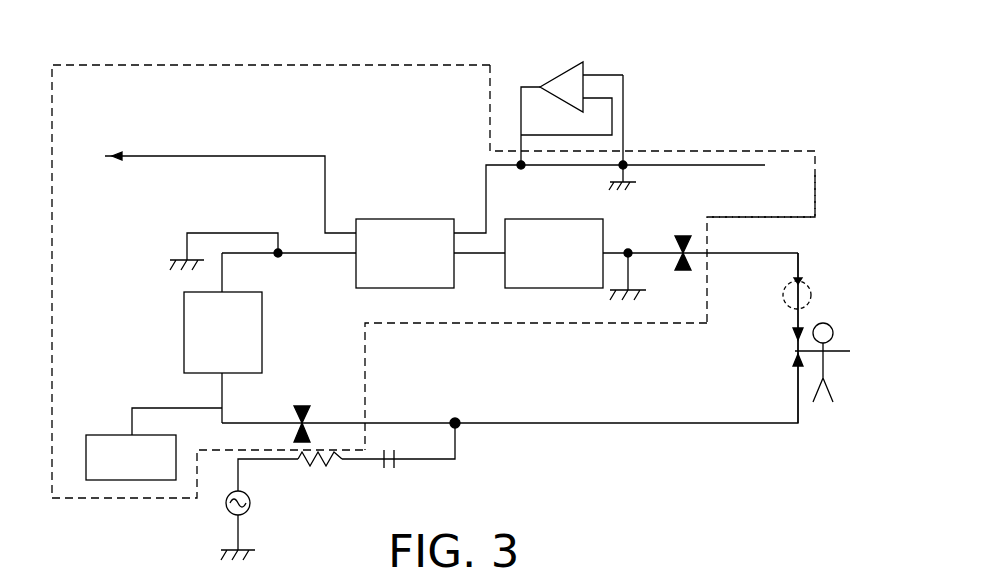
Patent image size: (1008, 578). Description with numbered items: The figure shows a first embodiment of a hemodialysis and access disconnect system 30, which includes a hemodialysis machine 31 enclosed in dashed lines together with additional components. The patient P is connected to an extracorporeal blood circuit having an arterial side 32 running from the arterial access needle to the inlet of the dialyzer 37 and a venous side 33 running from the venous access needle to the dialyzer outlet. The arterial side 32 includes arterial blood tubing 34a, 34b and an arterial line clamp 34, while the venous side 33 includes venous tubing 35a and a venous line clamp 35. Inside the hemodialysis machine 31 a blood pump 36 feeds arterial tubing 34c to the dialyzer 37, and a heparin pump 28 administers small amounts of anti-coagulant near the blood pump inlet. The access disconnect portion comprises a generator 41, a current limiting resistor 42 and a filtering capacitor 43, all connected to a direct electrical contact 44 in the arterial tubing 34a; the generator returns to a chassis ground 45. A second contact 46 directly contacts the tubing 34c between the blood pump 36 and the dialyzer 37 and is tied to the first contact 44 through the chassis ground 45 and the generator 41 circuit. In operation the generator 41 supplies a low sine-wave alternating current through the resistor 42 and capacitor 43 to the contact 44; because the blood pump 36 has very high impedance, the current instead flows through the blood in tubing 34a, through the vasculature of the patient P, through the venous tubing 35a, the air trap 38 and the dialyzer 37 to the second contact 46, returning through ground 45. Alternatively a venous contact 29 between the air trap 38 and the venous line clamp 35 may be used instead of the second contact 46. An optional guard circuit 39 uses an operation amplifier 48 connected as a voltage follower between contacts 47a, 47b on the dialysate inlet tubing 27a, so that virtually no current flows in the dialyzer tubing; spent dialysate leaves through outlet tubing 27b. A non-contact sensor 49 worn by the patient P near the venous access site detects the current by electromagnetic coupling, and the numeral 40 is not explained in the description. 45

The inlet tubing 27a is at (720, 165).
The outlet tubing 27b is at (216, 156).
The heparin pump 28 is at (122, 482).
The venous contact 29 is at (636, 260).
The hemodialysis and access disconnect system 30 is at (800, 98).
The hemodialysis machine 31 is at (53, 300).
The arterial side 32 is at (628, 452).
The venous side 33 is at (812, 238).
The arterial line clamp 34 is at (312, 412).
The arterial blood tubing 34a is at (672, 421).
The arterial blood tubing 34b is at (230, 423).
The arterial tubing 34c is at (322, 258).
The venous line clamp 35 is at (682, 238).
The venous tubing 35a is at (757, 256).
The blood pump 36 is at (184, 336).
The dialyzer 37 is at (411, 219).
The air trap 38 is at (534, 219).
The guard circuit 39 is at (663, 68).
The signal injection circuit 40 is at (460, 482).
The generator 41 is at (226, 512).
The current limiting resistor 42 is at (308, 467).
The filtering capacitor 43 is at (395, 468).
The direct electrical contact 44 is at (460, 428).
The chassis ground 45 is at (184, 246).
The second contact 46 is at (280, 249).
The contact 47a is at (626, 163).
The contact 47b is at (515, 164).
The operation amplifier 48 is at (556, 72).
The sensor 49 is at (812, 290).
The patient P is at (830, 386).